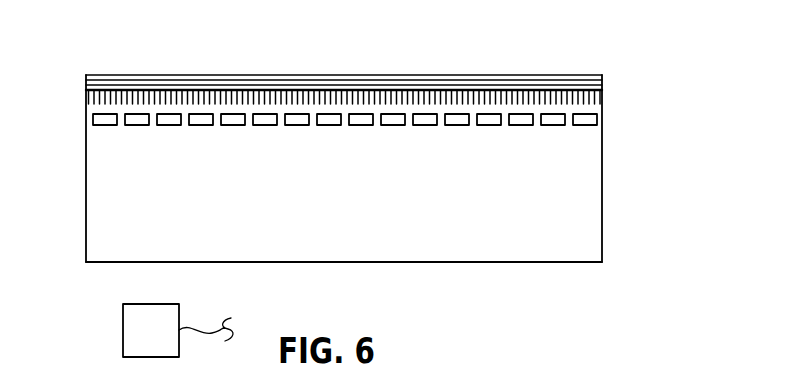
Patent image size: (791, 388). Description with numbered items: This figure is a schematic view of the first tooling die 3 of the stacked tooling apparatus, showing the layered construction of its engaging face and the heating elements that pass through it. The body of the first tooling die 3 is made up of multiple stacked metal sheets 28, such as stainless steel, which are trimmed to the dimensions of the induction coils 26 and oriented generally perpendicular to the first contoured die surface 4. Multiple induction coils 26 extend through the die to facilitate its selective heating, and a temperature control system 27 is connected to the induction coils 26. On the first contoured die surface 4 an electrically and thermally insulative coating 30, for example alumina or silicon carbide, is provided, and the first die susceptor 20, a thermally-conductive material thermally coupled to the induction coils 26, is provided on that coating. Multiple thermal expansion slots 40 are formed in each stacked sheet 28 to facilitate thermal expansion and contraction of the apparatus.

The first tooling die 3 is at (463, 262).
The first contoured die surface 4 is at (266, 93).
The first die susceptor 20 is at (398, 75).
The induction coils 26 is at (328, 125).
The temperature control system 27 is at (133, 331).
The stacked metal sheets 28 is at (580, 190).
The electrically and thermally insulative coating 30 is at (487, 90).
The thermal expansion slots 40 is at (552, 100).